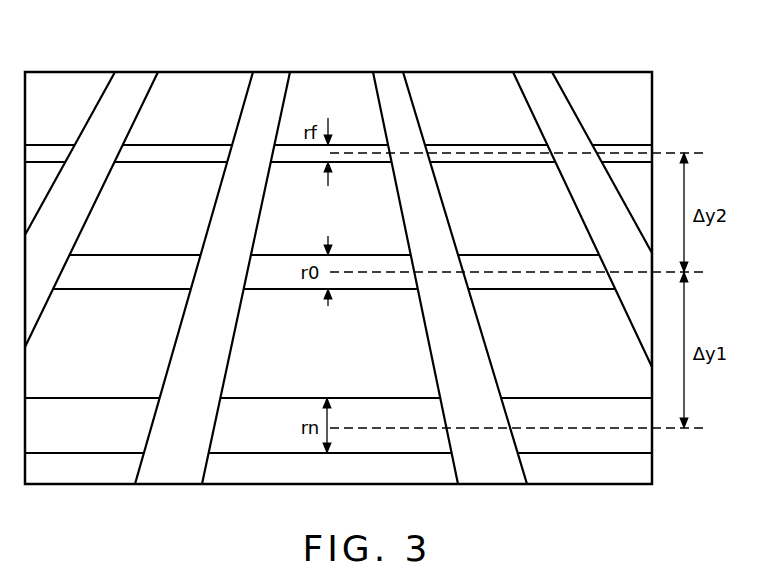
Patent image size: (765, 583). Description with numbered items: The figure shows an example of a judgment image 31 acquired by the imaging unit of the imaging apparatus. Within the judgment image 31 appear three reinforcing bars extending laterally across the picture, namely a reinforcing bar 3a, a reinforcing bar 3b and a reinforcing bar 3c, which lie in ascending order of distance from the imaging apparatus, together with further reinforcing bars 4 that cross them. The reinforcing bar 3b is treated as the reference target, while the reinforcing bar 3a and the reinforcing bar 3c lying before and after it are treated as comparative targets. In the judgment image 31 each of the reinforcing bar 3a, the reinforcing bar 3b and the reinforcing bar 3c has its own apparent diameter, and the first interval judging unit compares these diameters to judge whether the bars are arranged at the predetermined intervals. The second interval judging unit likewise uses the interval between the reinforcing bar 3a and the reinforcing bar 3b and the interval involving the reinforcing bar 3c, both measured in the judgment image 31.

The reinforcing bar 4 is at (136, 82).
The judgment image 31 is at (609, 72).
The reinforcing bar 3a is at (90, 405).
The reinforcing bar 3b is at (135, 265).
The reinforcing bar 3c is at (178, 140).